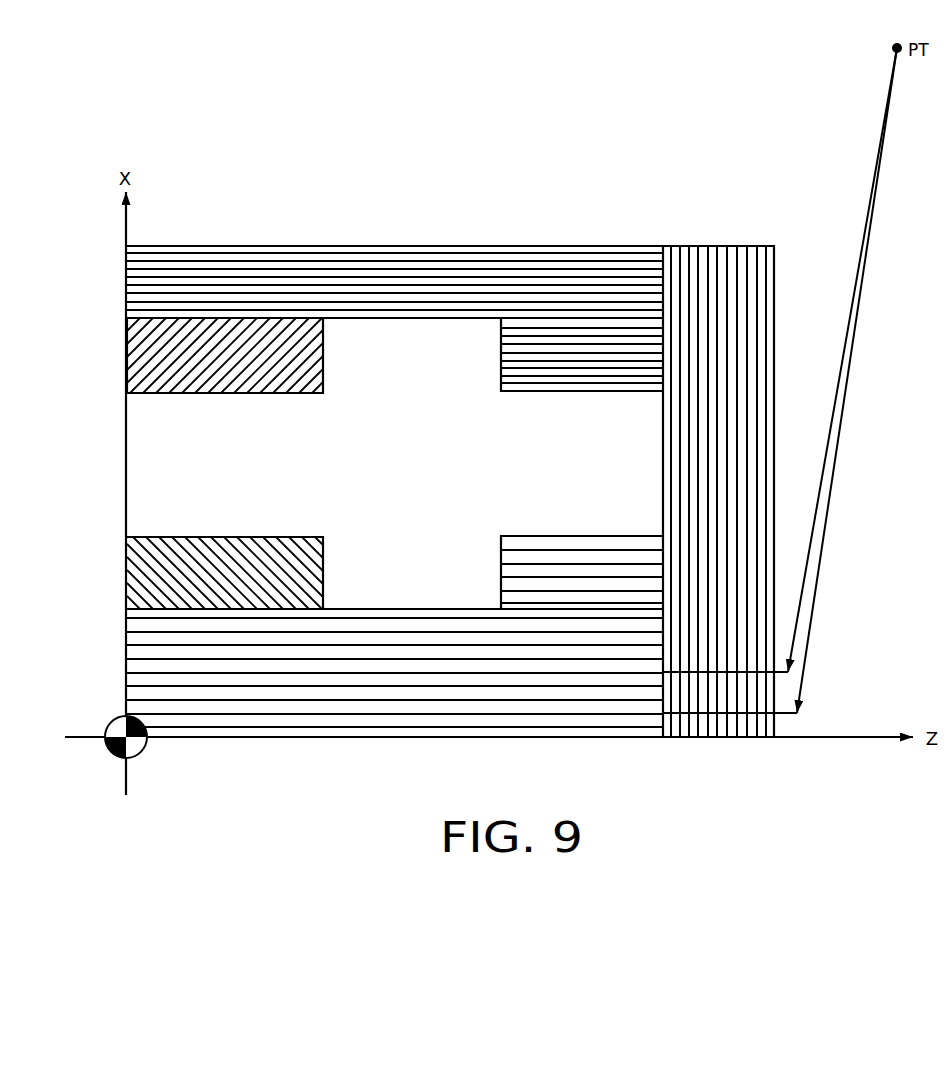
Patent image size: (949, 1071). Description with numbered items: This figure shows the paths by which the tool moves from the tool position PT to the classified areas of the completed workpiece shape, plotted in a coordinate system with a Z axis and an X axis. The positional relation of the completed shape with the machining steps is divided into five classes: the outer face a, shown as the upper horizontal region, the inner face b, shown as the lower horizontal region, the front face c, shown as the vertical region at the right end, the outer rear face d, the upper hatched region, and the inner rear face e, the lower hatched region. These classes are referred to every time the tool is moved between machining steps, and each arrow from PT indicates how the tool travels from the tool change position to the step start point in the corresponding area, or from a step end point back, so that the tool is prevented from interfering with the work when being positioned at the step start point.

The outer face area a is at (897, 48).
The inner face area b is at (423, 673).
The front face area c is at (897, 48).
The outer rear face area d is at (897, 48).
The inner rear face area e is at (232, 714).